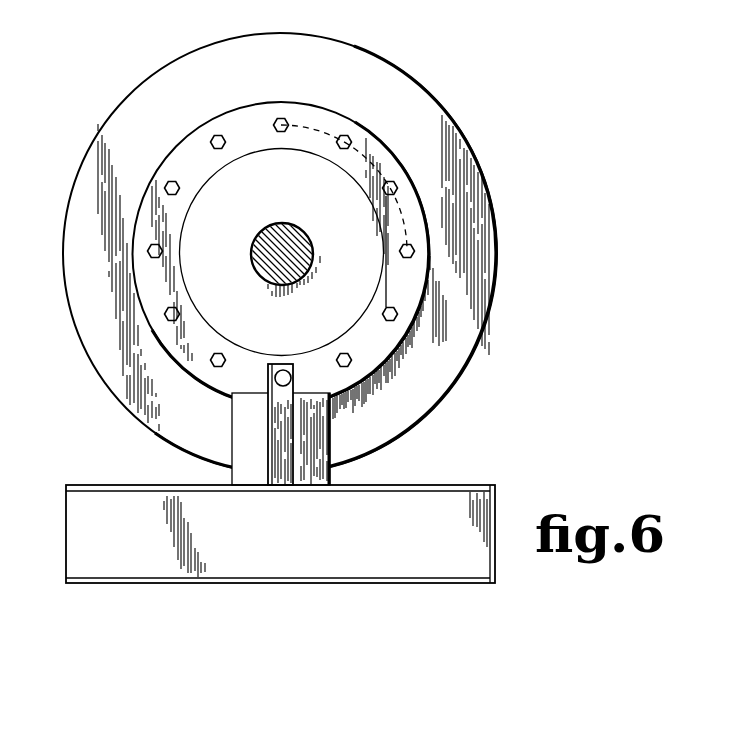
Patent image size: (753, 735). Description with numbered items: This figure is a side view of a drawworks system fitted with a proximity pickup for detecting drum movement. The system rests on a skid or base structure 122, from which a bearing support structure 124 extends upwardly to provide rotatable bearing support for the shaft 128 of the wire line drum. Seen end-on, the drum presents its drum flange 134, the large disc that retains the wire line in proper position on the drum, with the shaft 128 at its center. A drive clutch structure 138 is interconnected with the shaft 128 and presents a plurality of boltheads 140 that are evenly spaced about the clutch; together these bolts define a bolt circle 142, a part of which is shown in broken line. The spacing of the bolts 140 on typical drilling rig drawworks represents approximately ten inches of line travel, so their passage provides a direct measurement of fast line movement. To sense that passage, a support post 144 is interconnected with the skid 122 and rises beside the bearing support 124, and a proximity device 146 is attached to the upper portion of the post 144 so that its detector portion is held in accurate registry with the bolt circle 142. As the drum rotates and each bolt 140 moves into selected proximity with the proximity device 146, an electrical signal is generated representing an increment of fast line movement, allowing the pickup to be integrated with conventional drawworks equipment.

The skid or base structure 122 is at (328, 553).
The bearing support structure 124 is at (318, 442).
The shaft 128 is at (293, 239).
The drum flange 134 is at (362, 63).
The drive clutch structure 138 is at (418, 287).
The boltheads 140 is at (211, 143).
The bolt circle 142 is at (383, 153).
The support post 144 is at (283, 453).
The proximity device 146 is at (281, 369).